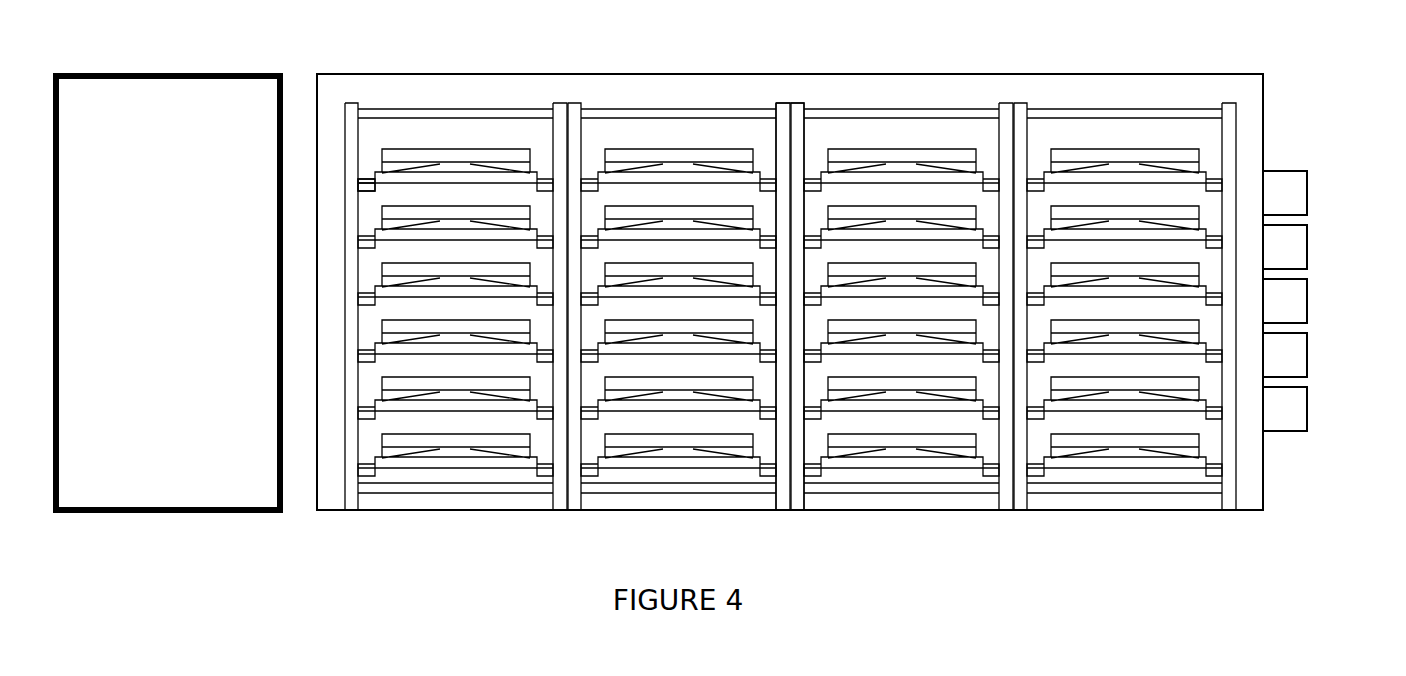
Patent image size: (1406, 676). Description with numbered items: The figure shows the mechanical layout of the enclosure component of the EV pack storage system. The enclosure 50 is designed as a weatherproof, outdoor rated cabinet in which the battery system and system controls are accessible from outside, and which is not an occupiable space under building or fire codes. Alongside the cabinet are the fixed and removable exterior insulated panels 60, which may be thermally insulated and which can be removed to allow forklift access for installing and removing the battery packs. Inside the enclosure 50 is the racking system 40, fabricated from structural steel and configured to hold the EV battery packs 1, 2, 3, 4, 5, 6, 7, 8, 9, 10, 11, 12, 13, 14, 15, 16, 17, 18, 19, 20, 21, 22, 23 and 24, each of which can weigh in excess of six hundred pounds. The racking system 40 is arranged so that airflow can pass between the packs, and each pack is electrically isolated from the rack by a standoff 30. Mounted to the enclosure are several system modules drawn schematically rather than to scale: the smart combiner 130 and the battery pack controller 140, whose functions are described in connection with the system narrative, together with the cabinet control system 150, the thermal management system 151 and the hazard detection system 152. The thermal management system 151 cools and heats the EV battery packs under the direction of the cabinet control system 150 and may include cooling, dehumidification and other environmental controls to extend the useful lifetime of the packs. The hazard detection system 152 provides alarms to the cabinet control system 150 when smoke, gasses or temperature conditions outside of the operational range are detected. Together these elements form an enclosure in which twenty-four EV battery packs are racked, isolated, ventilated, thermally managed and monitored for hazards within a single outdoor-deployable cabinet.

The EV battery pack 1 is at (455, 170).
The EV battery pack 2 is at (678, 170).
The EV battery pack 3 is at (901, 170).
The EV battery pack 4 is at (1124, 170).
The EV battery pack 5 is at (455, 227).
The EV battery pack 6 is at (678, 227).
The EV battery pack 7 is at (901, 227).
The EV battery pack 8 is at (1124, 227).
The EV battery pack 9 is at (455, 284).
The EV battery pack 10 is at (678, 284).
The EV battery pack 11 is at (901, 284).
The EV battery pack 12 is at (1124, 284).
The EV battery pack 13 is at (455, 341).
The EV battery pack 14 is at (678, 341).
The EV battery pack 15 is at (901, 341).
The EV battery pack 16 is at (1124, 341).
The EV battery pack 17 is at (455, 398).
The EV battery pack 18 is at (678, 398).
The EV battery pack 19 is at (901, 398).
The EV battery pack 20 is at (1124, 398).
The EV battery pack 21 is at (455, 455).
The EV battery pack 22 is at (678, 455).
The EV battery pack 23 is at (901, 455).
The EV battery pack 24 is at (1124, 455).
The standoff 30 is at (360, 184).
The racking system 40 is at (804, 130).
The enclosure 50 is at (800, 74).
The exterior insulated panels 60 is at (216, 73).
The smart combiner 130 is at (1307, 193).
The battery pack controller 140 is at (1307, 247).
The cabinet control system 150 is at (1307, 301).
The thermal management system 151 is at (1307, 355).
The hazard detection system 152 is at (1307, 409).